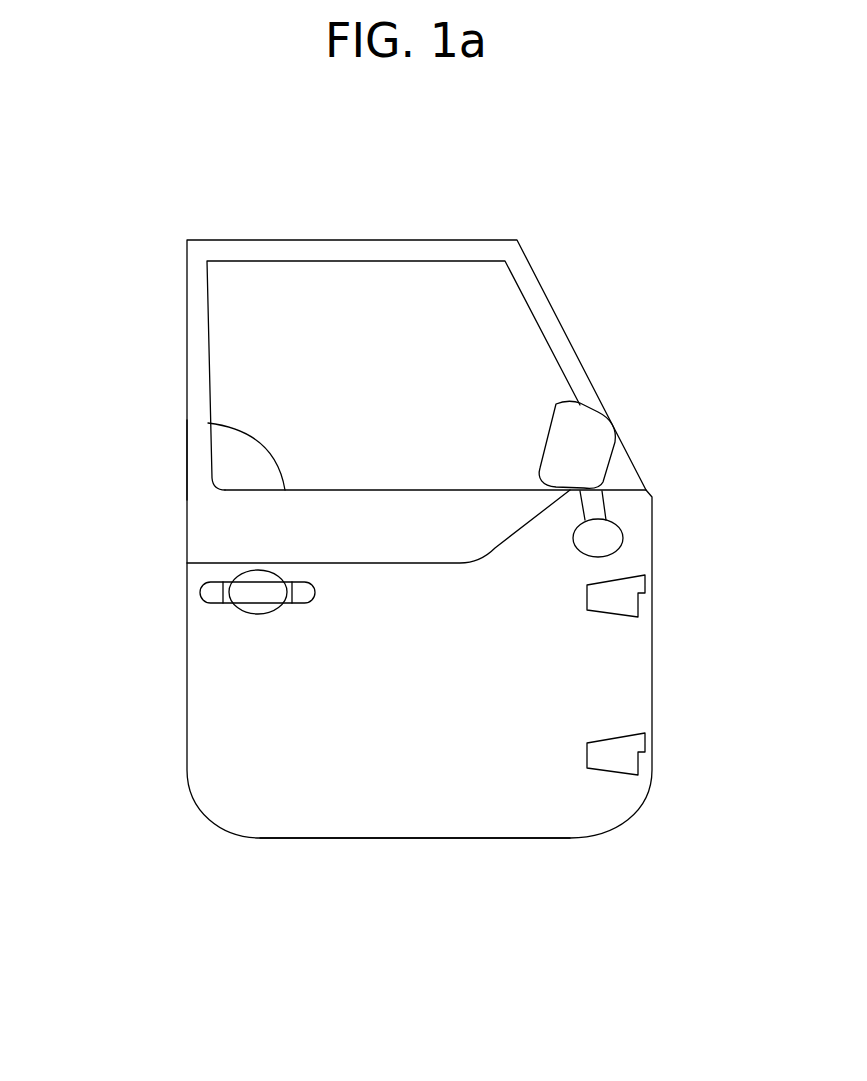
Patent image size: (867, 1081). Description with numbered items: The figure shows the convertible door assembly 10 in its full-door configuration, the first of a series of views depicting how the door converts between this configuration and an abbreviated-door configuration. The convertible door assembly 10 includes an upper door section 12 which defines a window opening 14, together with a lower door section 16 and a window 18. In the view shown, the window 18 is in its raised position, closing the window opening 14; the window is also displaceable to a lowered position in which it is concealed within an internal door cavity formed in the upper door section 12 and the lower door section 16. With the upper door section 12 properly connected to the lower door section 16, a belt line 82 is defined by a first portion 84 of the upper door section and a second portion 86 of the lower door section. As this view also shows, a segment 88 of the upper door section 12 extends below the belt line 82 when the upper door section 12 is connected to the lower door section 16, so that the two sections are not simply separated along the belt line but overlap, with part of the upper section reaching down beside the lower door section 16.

The convertible door assembly 10 is at (628, 250).
The upper door section 12 is at (217, 522).
The window opening 14 is at (207, 360).
The lower door section 16 is at (395, 803).
The window 18 is at (461, 374).
The belt line 82 is at (210, 423).
The first portion 84 is at (193, 458).
The second portion 86 is at (630, 508).
The segment 88 is at (442, 510).